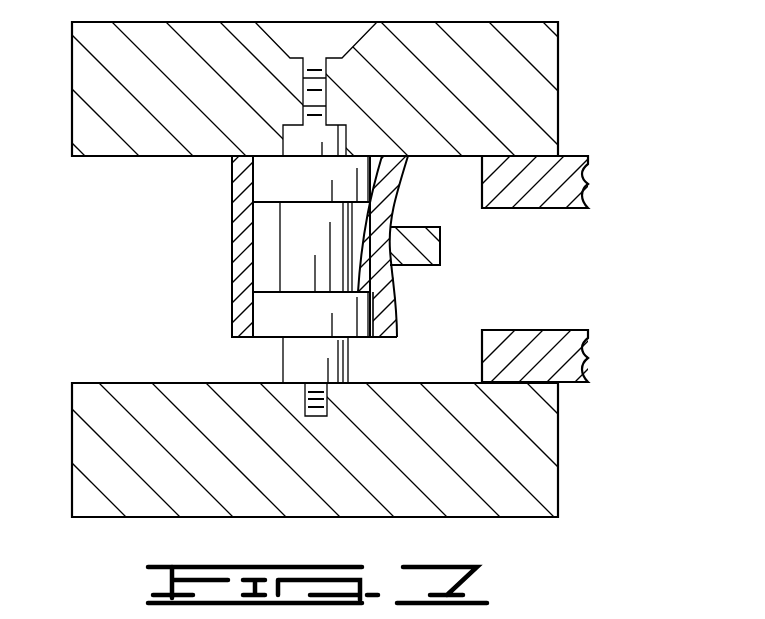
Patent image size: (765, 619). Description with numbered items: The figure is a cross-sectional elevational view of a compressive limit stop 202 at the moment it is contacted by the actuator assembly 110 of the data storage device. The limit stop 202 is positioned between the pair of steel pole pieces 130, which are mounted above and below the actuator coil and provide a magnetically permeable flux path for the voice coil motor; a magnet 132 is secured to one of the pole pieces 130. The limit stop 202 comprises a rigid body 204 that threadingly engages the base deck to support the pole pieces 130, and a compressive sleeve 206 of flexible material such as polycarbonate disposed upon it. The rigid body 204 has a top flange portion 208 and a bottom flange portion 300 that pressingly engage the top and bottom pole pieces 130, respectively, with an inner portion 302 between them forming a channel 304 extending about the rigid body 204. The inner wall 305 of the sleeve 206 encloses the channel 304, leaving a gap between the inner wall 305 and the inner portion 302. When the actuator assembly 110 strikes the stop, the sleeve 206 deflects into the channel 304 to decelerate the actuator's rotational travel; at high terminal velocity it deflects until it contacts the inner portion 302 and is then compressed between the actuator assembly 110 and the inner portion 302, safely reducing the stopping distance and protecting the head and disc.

The actuator assembly 110 is at (446, 247).
The pole pieces 130 is at (533, 73).
The magnet 132 is at (557, 177).
The compressive limit stop 202 is at (248, 269).
The rigid body 204 is at (303, 232).
The compressive sleeve 206 is at (253, 195).
The top flange portion 208 is at (275, 173).
The bottom flange portion 300 is at (278, 313).
The inner portion 302 is at (280, 265).
The channel 304 is at (371, 281).
The inner wall 305 is at (353, 258).